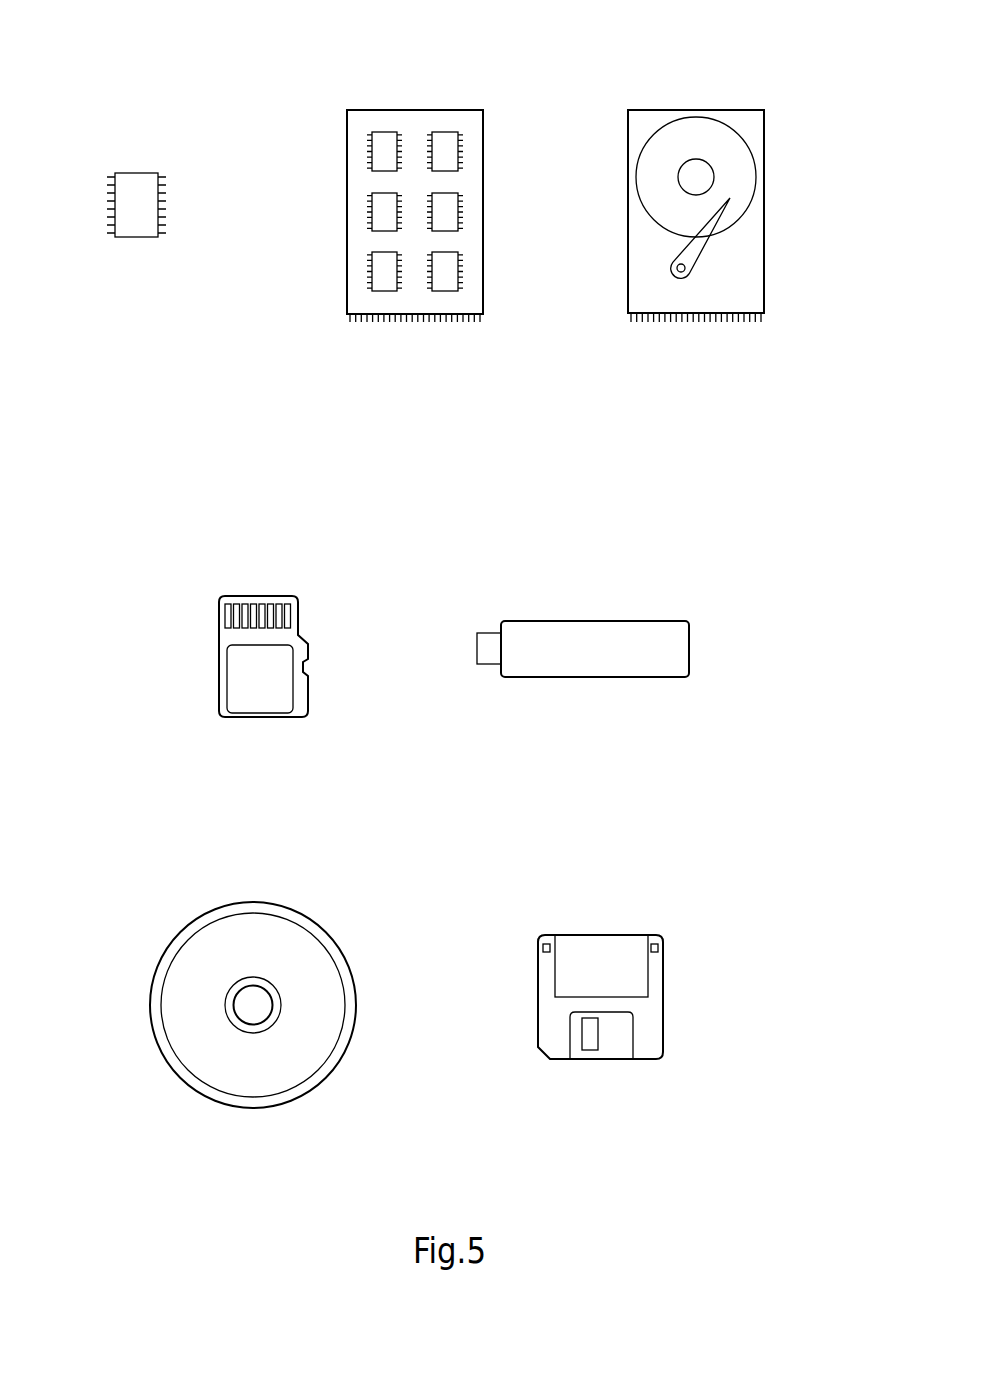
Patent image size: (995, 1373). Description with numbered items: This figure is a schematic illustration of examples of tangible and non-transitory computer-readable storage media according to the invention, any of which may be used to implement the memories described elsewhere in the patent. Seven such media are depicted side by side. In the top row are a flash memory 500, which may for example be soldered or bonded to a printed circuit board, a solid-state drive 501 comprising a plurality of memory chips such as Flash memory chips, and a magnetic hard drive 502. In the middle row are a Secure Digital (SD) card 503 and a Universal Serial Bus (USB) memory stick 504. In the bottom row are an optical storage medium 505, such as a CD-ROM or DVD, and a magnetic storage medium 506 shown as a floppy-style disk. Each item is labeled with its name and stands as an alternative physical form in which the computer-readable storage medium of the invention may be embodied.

The flash memory 500 is at (162, 133).
The solid-state drive 501 is at (485, 72).
The magnetic hard drive 502 is at (767, 72).
The Secure Digital (SD) card 503 is at (298, 562).
The Universal Serial Bus (USB) memory stick 504 is at (664, 582).
The optical storage medium 505 is at (337, 895).
The magnetic storage medium 506 is at (659, 897).